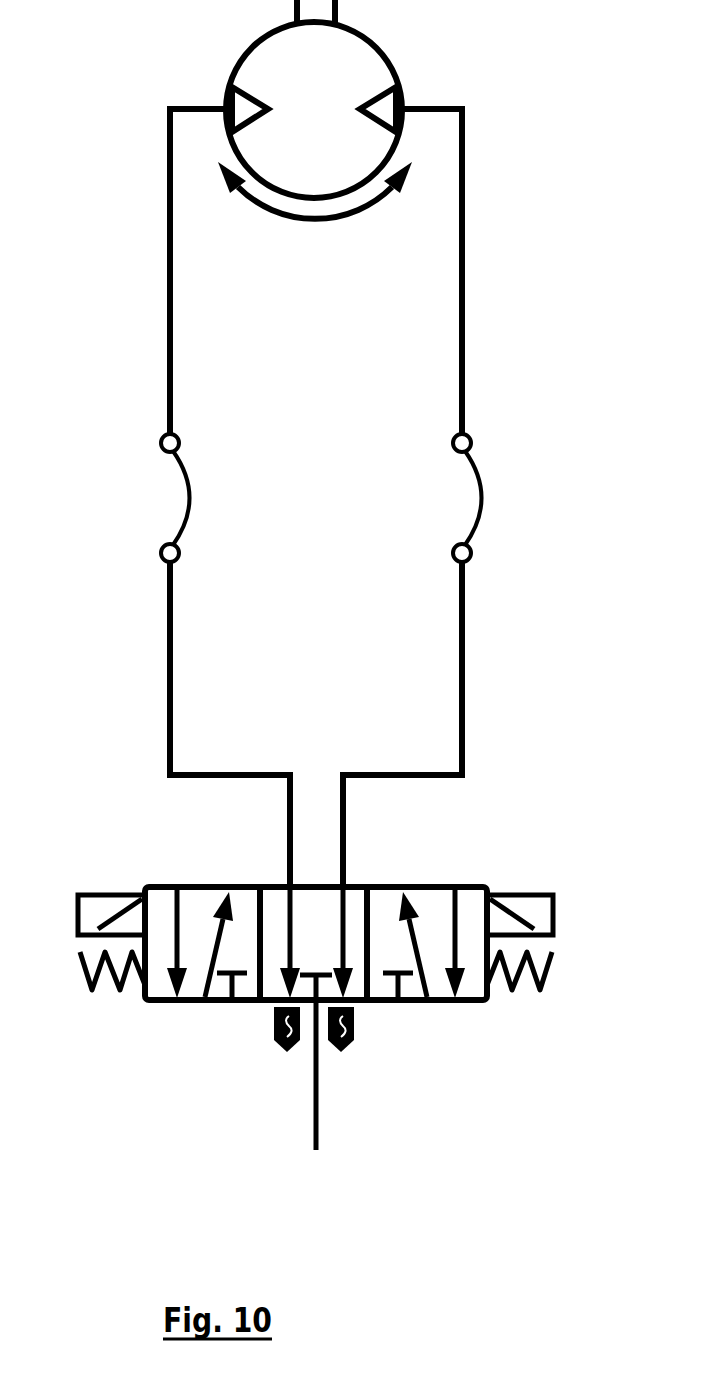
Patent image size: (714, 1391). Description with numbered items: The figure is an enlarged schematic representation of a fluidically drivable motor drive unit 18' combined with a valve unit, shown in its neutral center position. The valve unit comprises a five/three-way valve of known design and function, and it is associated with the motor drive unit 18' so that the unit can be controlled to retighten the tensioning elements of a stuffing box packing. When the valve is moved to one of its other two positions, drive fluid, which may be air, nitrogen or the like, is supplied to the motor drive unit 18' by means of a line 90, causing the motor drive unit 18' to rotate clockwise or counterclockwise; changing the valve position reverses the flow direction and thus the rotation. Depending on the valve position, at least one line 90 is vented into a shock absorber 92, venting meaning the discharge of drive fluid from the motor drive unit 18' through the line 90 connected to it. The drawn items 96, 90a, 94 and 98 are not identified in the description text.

The motor drive unit 18' is at (315, 109).
The hydraulic lines 96 is at (372, 770).
The line 90 is at (250, 1010).
The valve switching positions 90a is at (207, 883).
The solenoid actuators 94 is at (108, 892).
The shock absorber 92 is at (110, 993).
The throttle / relief elements 98 is at (273, 1038).